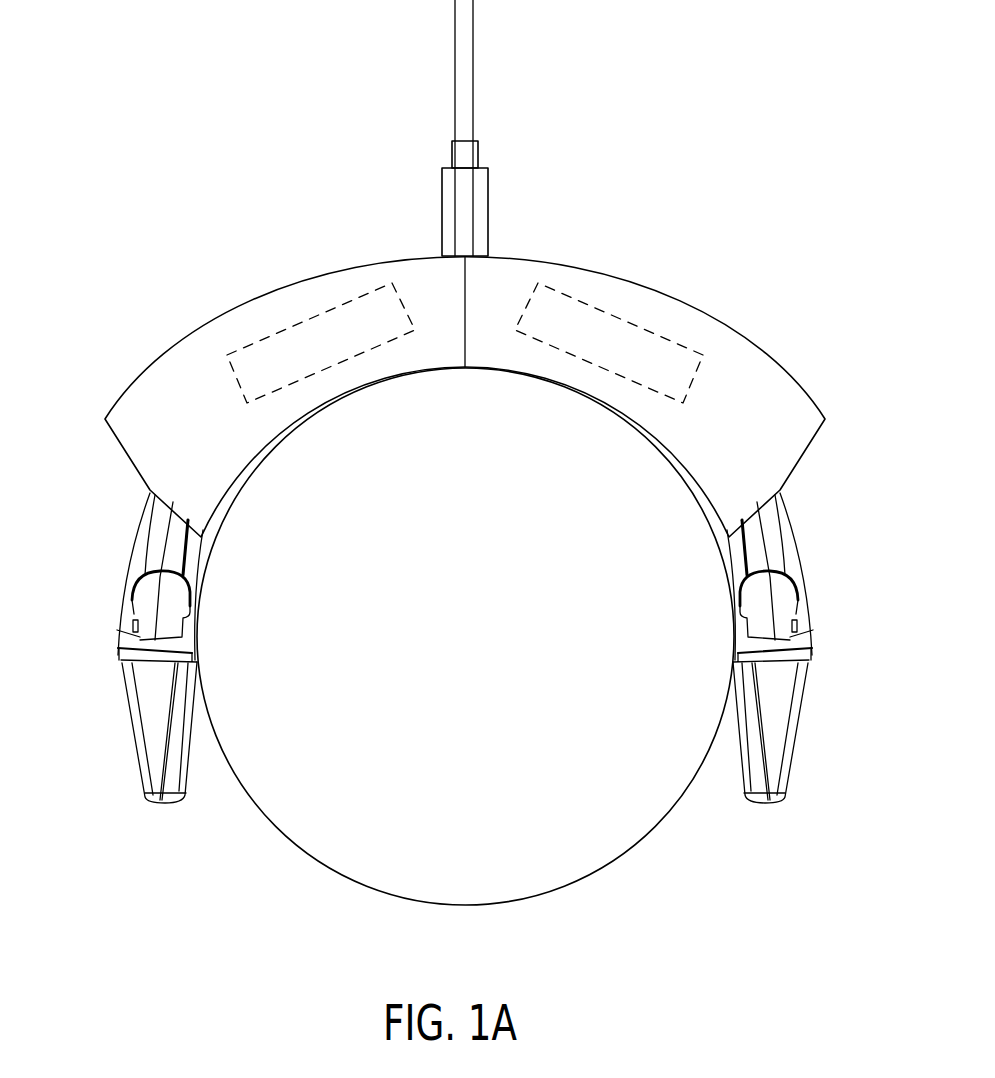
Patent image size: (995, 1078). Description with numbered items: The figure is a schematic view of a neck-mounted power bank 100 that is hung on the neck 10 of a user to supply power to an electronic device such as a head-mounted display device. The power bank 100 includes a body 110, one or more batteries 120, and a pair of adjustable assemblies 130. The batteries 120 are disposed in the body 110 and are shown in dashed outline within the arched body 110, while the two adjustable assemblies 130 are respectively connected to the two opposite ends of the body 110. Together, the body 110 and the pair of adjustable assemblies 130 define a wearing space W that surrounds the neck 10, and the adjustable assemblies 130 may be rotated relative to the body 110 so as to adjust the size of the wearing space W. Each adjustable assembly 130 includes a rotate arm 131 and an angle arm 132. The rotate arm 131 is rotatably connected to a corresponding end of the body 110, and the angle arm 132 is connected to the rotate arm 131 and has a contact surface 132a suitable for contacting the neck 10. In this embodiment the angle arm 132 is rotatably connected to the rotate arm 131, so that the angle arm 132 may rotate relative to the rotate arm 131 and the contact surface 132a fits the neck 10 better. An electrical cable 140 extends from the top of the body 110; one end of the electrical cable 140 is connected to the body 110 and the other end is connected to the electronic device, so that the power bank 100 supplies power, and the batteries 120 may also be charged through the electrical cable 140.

The neck 10 is at (562, 867).
The wearing space W is at (650, 872).
The neck-mounted power bank 100 is at (840, 812).
The body 110 is at (757, 357).
The batteries 120 is at (340, 300).
The adjustable assemblies 130 is at (463, 682).
The rotate arm 131 is at (145, 614).
The angle arm 132 is at (147, 719).
The contact surface 132a is at (187, 758).
The electrical cable 140 is at (467, 18).